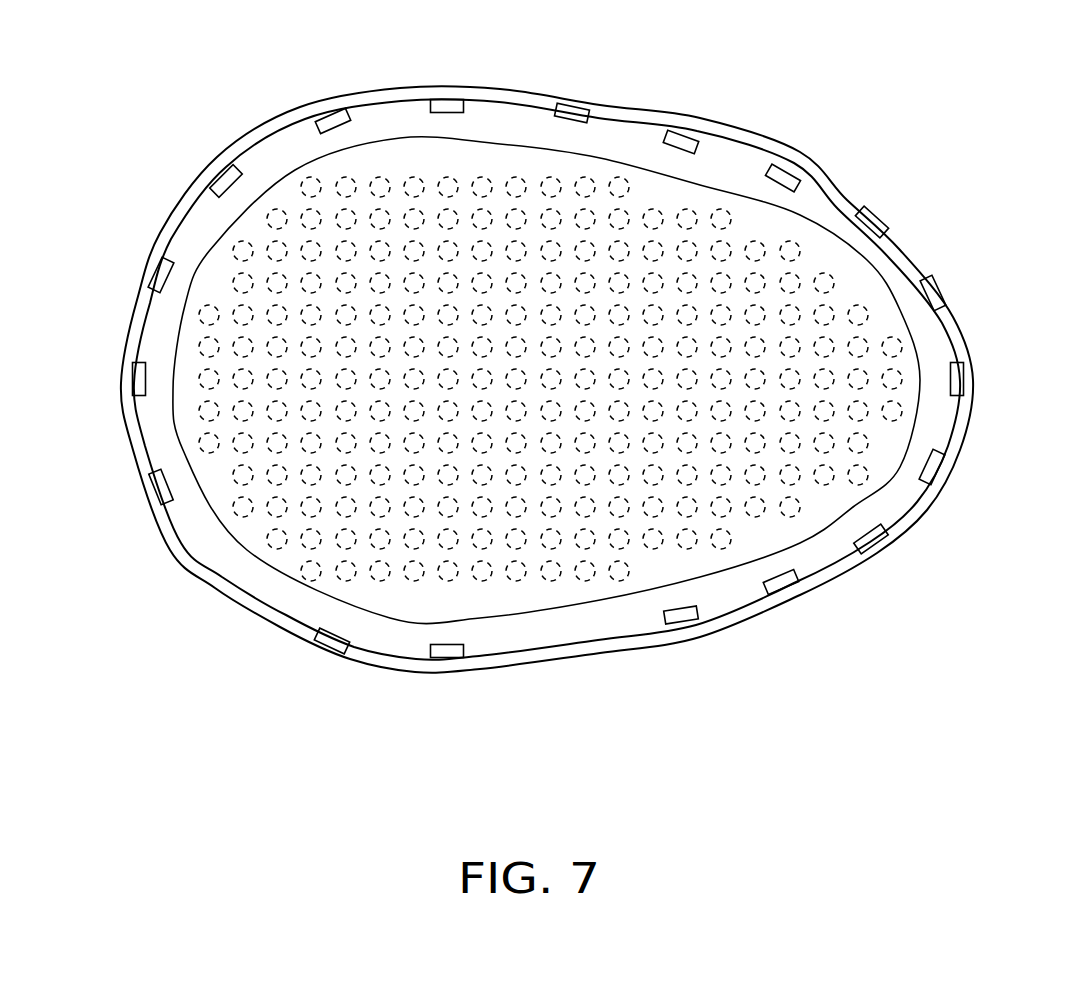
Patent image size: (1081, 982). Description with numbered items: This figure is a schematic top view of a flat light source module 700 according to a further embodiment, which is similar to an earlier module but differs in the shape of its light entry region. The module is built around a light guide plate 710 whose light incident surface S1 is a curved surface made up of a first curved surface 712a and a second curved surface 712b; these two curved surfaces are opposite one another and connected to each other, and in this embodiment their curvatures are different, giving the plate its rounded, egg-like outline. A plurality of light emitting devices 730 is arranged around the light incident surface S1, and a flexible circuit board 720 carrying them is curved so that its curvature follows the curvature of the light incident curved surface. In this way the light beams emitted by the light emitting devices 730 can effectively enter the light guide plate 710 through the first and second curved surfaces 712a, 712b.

The flat light source module 700 is at (553, 383).
The light guide plate 710 is at (485, 383).
The first curved surface 712a is at (211, 240).
The second curved surface 712b is at (719, 190).
The flexible circuit board 720 is at (765, 603).
The light emitting device 730 is at (682, 618).
The light incident surface S1 is at (294, 168).